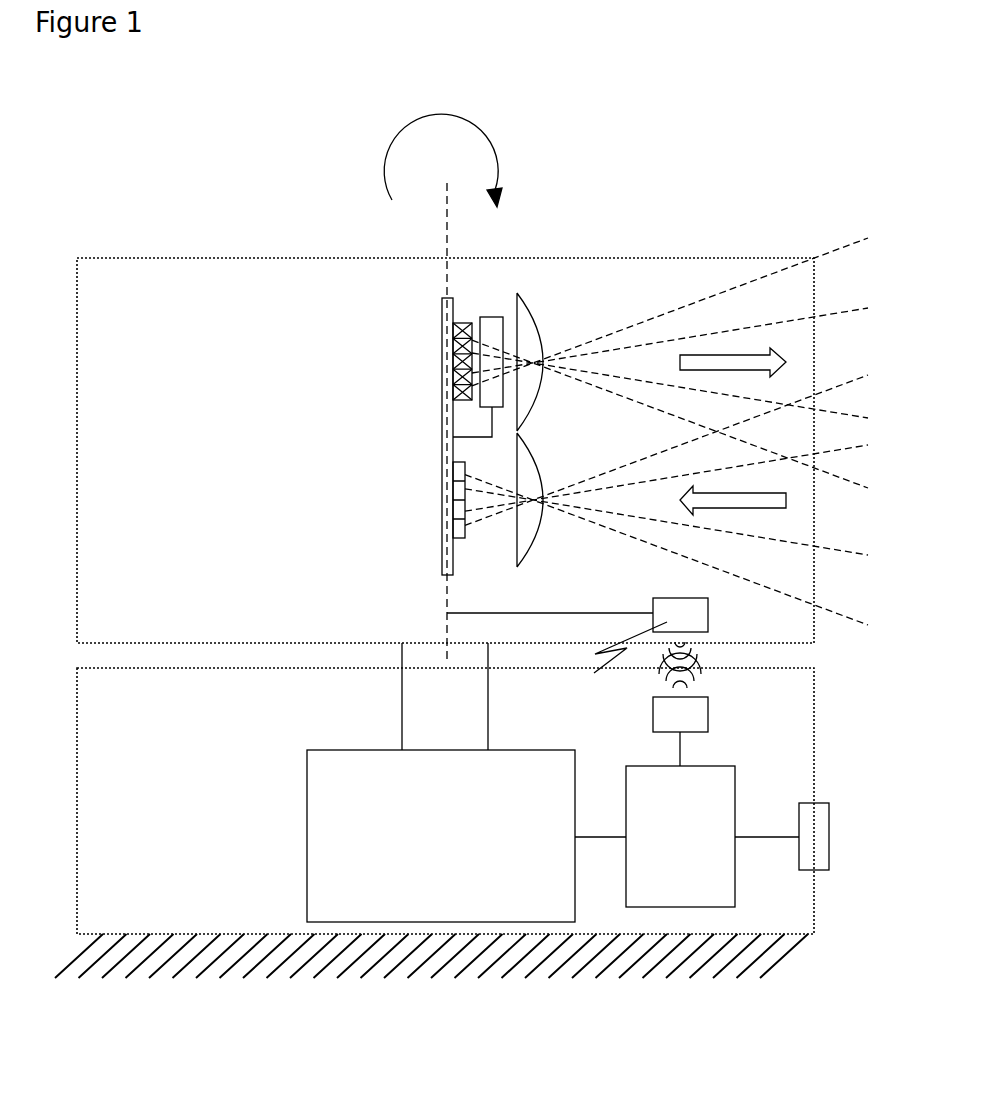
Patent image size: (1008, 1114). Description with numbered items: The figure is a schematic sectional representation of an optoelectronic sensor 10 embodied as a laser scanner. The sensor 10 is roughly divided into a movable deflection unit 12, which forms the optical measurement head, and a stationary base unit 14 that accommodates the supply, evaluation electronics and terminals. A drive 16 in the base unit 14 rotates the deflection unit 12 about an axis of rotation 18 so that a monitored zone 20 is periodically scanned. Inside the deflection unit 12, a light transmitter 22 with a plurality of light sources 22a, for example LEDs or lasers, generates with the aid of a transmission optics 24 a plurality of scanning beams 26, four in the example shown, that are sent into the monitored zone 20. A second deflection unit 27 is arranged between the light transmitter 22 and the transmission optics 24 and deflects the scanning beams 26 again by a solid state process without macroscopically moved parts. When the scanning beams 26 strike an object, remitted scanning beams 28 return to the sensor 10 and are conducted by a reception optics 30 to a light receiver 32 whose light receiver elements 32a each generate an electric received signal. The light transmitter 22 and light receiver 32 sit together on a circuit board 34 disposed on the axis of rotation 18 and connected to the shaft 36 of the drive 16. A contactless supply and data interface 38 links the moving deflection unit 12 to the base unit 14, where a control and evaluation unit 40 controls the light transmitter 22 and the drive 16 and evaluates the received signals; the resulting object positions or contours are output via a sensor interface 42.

The optoelectronic sensor 10 is at (729, 181).
The deflection unit 12 is at (409, 440).
The base unit 14 is at (409, 804).
The drive 16 is at (401, 836).
The axis of rotation 18 is at (433, 388).
The monitored zone 20 is at (860, 187).
The light transmitter 22 is at (422, 361).
The light sources 22a is at (480, 291).
The transmission optics 24 is at (556, 352).
The scanning beams 26 is at (698, 363).
The second deflection unit 27 is at (518, 320).
The remitted scanning beams 28 is at (694, 500).
The reception optics 30 is at (555, 514).
The light receiver 32 is at (419, 500).
The light receiver elements 32a is at (486, 557).
The circuit board 34 is at (400, 436).
The shaft 36 is at (408, 696).
The contactless supply and data interface 38 is at (634, 704).
The control and evaluation unit 40 is at (704, 846).
The sensor interface 42 is at (843, 863).